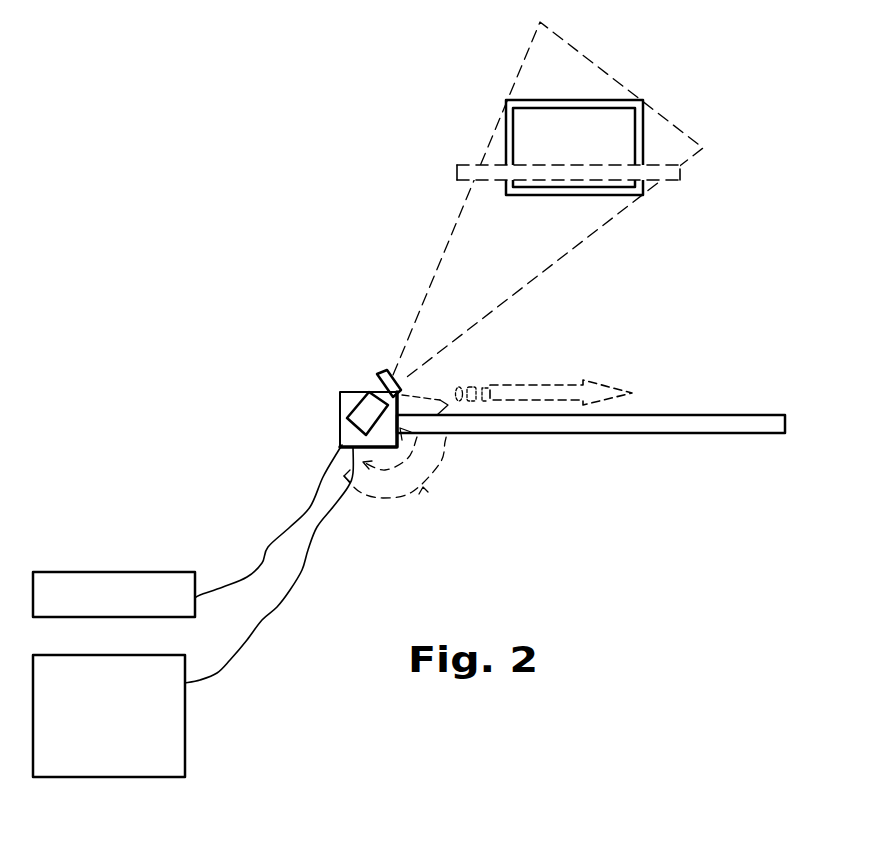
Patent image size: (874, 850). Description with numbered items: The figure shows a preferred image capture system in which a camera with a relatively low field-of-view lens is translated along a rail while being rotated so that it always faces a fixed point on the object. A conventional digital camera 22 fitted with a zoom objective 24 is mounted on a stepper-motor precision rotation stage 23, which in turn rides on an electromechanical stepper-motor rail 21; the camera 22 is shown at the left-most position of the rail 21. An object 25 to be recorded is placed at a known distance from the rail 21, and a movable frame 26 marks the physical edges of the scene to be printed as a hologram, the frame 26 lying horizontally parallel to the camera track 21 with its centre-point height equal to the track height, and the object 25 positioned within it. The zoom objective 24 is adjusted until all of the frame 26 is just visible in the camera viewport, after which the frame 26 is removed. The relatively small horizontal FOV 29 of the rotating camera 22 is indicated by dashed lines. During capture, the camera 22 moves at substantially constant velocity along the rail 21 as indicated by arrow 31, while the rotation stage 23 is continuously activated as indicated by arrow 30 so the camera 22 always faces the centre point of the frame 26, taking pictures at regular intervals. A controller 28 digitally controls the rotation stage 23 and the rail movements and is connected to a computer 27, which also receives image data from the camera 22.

The electromechanical stepper-motor rail 21 is at (480, 425).
The digital camera 22 is at (365, 408).
The stepper-motor precision rotation stage 23 is at (343, 430).
The zoom objective 24 is at (380, 375).
The object 25 is at (567, 102).
The movable frame 26 is at (603, 173).
The computer 27 is at (173, 723).
The controller 28 is at (120, 577).
The horizontal FOV 29 is at (478, 237).
The arrow 30 is at (423, 490).
The arrow 31 is at (528, 392).